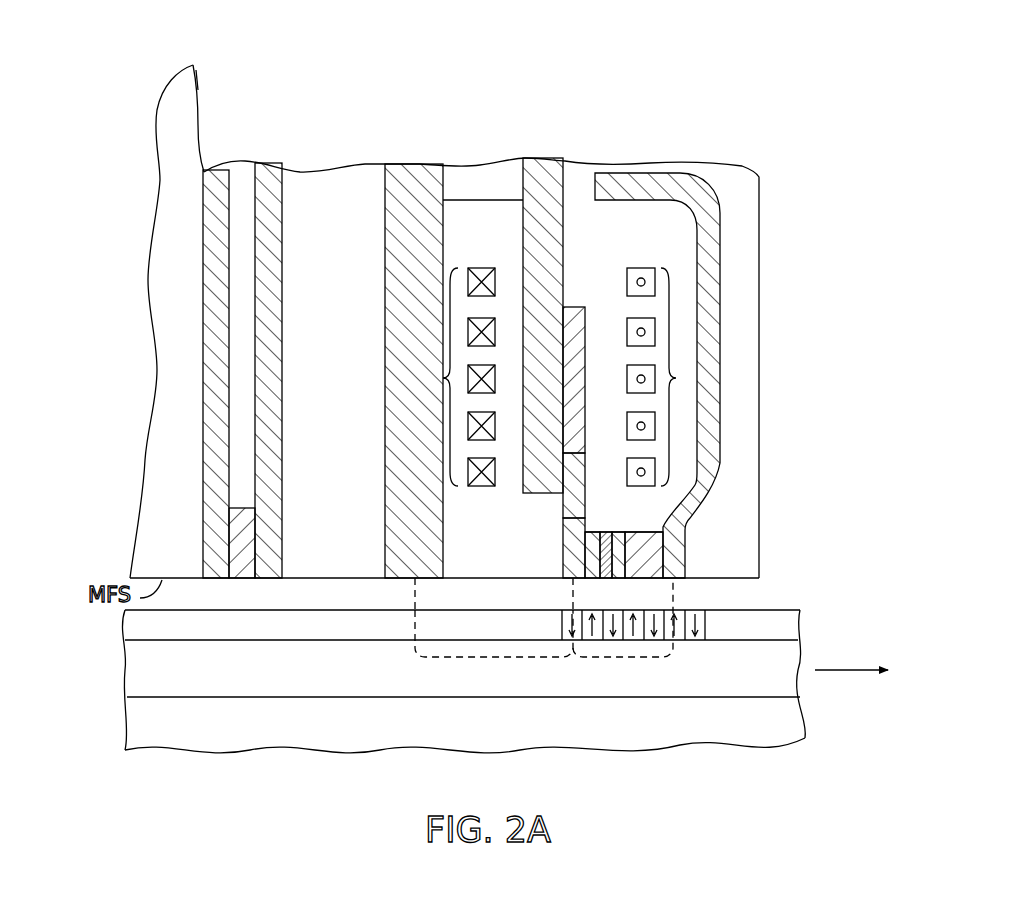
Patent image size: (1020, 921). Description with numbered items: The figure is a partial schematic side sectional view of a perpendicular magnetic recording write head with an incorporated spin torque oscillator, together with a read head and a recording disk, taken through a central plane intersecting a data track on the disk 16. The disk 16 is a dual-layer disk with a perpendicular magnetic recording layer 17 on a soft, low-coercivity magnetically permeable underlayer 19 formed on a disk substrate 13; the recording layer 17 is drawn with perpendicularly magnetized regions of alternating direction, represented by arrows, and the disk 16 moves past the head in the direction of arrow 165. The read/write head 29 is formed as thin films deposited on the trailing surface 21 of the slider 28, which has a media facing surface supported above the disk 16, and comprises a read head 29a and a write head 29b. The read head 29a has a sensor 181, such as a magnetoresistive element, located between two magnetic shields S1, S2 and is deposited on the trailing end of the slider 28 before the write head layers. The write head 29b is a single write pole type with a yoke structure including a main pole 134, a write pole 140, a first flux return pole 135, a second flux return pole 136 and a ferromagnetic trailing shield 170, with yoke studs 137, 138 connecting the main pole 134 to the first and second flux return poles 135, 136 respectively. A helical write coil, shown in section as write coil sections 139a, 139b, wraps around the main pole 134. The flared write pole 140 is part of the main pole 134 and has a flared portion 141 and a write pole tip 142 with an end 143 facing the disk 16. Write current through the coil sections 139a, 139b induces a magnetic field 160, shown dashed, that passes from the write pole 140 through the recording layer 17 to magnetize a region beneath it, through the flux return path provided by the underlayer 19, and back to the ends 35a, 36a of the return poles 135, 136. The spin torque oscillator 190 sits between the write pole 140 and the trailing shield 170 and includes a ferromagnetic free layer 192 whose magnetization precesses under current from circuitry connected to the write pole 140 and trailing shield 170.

The disk 16 is at (106, 776).
The disk substrate 13 is at (795, 716).
The perpendicular magnetic data recording layer 17 is at (786, 625).
The soft underlayer 19 is at (790, 660).
The arrow 165 is at (843, 669).
The trailing surface 21 is at (183, 100).
The slider 28 is at (170, 135).
The read/write head 29 is at (715, 82).
The read head 29a is at (281, 159).
The write head 29b is at (715, 141).
The magnetic shield S1 is at (218, 445).
The magnetic shield S2 is at (280, 455).
The sensor 181 is at (240, 558).
The end of first flux return pole 35a is at (400, 576).
The first flux return pole 135 is at (396, 246).
The yoke stud 137 is at (488, 172).
The main pole 134 is at (538, 228).
The yoke stud 138 is at (572, 172).
The write pole 140 is at (573, 312).
The flared portion 141 is at (565, 505).
The write pole tip 142 is at (574, 568).
The end of write pole tip 143 is at (566, 582).
The write coil section 139a is at (441, 378).
The write coil section 139b is at (678, 378).
The second flux return pole 136 is at (708, 412).
The spin torque oscillator 190 is at (624, 530).
The free layer 192 is at (606, 578).
The trailing shield 170 is at (652, 548).
The end of second flux return pole 36a is at (688, 570).
The magnetic field 160 is at (686, 606).